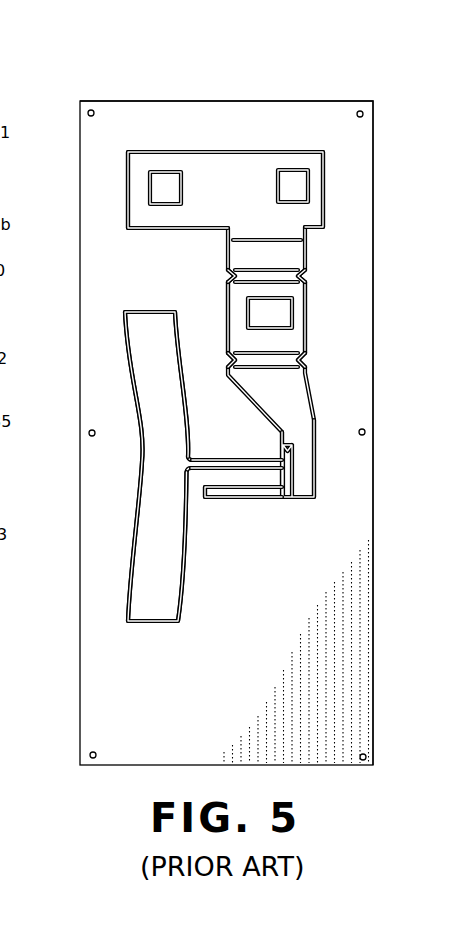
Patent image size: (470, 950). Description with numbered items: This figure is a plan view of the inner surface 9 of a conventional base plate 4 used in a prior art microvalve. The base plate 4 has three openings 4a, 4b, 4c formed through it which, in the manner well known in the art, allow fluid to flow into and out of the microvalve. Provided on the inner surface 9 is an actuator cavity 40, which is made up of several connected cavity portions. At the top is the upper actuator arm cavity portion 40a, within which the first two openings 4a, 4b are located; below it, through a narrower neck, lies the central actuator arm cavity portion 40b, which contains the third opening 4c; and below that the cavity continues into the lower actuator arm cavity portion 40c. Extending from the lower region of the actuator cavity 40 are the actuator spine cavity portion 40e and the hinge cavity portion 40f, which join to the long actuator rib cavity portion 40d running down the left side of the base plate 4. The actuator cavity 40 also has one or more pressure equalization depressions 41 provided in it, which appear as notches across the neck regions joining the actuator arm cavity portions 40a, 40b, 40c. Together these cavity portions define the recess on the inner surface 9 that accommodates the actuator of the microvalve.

The base plate 4 is at (181, 101).
The opening 4a is at (165, 179).
The opening 4b is at (290, 178).
The opening 4c is at (272, 305).
The inner surface 9 is at (332, 117).
The actuator cavity 40 is at (253, 168).
The upper actuator arm cavity portion 40a is at (292, 213).
The central actuator arm cavity portion 40b is at (282, 337).
The lower actuator arm cavity portion 40c is at (300, 487).
The actuator rib cavity portion 40d is at (150, 567).
The actuator spine cavity portion 40e is at (232, 468).
The hinge cavity portion 40f is at (244, 492).
The pressure equalization depression 41 is at (272, 268).